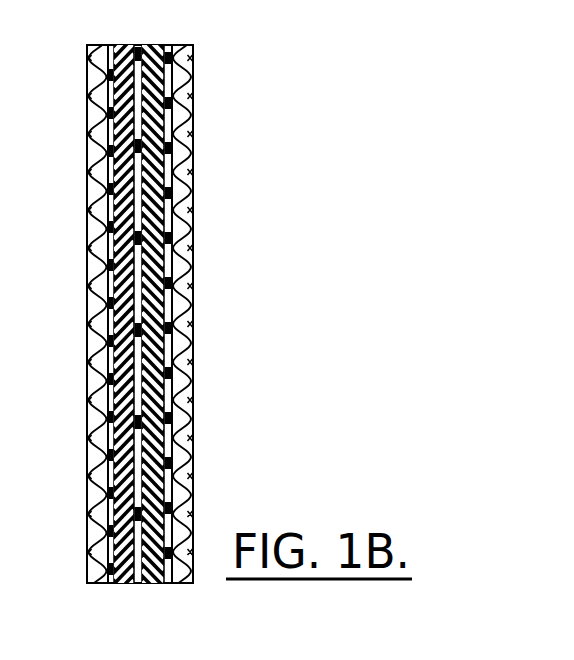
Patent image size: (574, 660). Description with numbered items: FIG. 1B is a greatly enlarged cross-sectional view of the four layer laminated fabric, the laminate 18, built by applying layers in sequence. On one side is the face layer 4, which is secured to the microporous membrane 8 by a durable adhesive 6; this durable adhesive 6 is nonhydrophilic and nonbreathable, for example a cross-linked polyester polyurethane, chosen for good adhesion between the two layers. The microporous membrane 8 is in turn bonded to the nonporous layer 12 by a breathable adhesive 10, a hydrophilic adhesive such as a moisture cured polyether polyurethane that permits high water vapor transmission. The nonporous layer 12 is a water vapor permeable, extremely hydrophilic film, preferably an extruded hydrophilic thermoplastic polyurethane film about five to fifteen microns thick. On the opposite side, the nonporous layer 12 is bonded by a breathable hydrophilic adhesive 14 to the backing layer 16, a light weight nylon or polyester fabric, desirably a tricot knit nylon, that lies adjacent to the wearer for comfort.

The face layer 4 is at (182, 585).
The durable adhesive 6 is at (165, 47).
The microporous membrane 8 is at (145, 585).
The breathable adhesive 10 is at (138, 47).
The nonporous layer 12 is at (122, 585).
The breathable hydrophilic adhesive 14 is at (112, 72).
The backing layer 16 is at (99, 585).
The laminate 18 is at (230, 262).